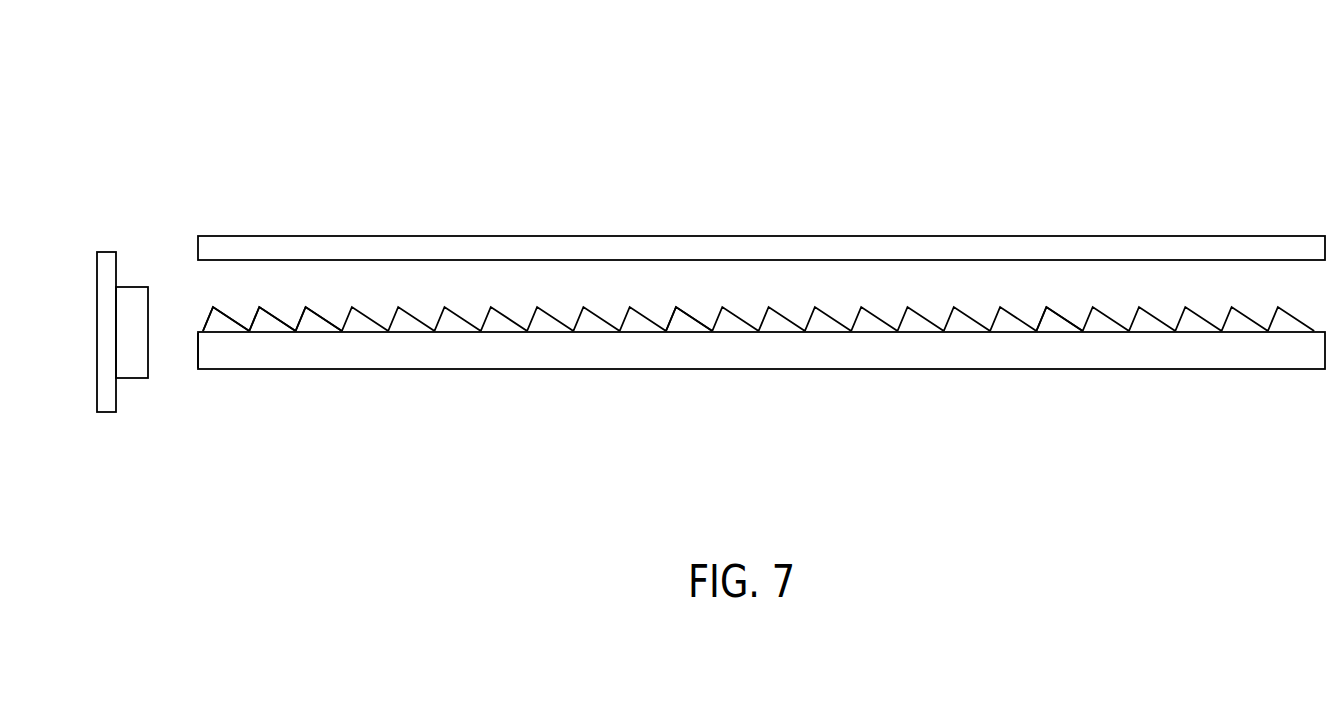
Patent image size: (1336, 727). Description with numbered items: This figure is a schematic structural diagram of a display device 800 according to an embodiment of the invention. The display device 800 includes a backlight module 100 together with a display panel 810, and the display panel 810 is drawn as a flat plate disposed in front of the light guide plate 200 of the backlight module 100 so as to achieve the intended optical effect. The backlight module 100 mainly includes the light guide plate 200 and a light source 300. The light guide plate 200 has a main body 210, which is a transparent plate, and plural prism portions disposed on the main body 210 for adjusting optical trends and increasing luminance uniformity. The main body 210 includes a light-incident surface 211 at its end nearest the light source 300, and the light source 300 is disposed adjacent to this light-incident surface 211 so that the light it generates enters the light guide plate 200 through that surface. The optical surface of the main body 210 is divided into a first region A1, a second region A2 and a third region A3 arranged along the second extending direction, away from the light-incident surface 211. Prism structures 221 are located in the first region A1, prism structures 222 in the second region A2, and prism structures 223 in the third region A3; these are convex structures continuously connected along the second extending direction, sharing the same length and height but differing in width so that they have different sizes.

The display device 800 is at (133, 46).
The backlight module 100 is at (208, 142).
The light source 300 is at (107, 259).
The light guide plate 200 is at (190, 316).
The display panel 810 is at (442, 247).
The main body 210 is at (1022, 350).
The light-incident surface 211 is at (199, 352).
The prism structures 221 is at (322, 325).
The prism structures 222 is at (690, 325).
The prism structures 223 is at (1058, 325).
The first region A1 is at (347, 302).
The second region A2 is at (897, 302).
The third region A3 is at (1313, 302).